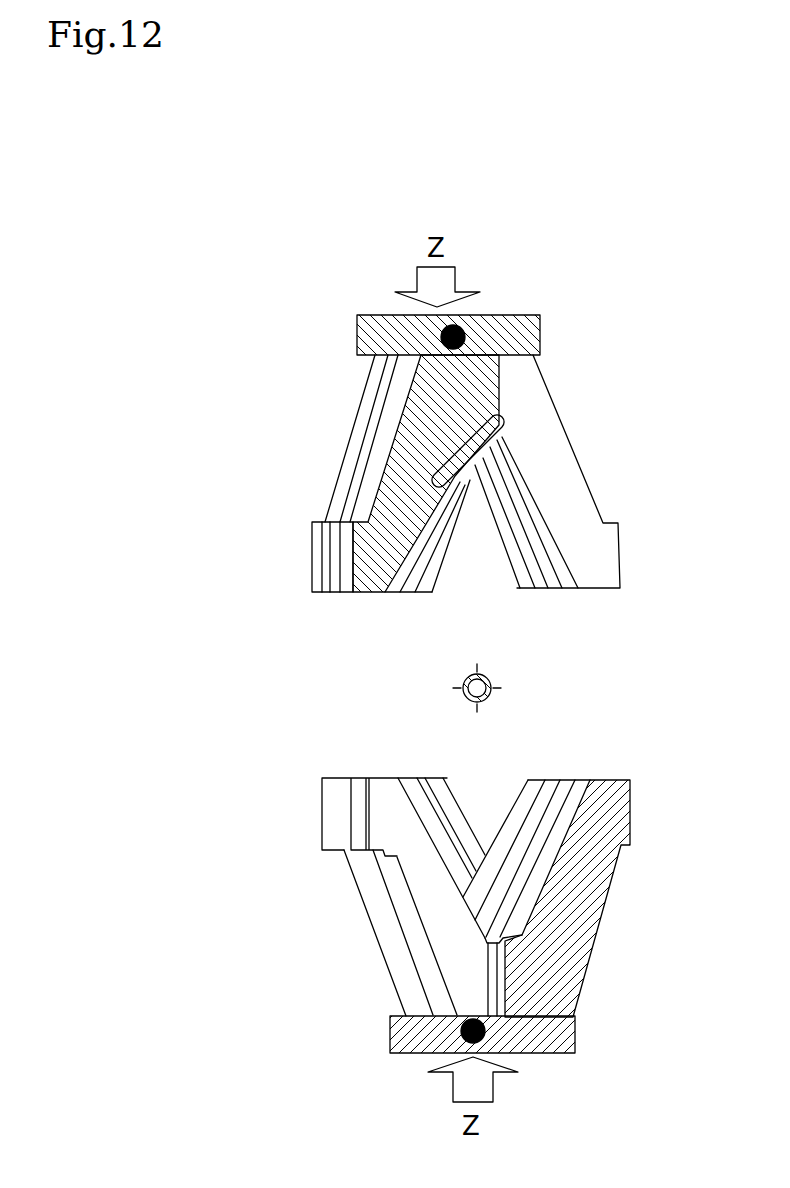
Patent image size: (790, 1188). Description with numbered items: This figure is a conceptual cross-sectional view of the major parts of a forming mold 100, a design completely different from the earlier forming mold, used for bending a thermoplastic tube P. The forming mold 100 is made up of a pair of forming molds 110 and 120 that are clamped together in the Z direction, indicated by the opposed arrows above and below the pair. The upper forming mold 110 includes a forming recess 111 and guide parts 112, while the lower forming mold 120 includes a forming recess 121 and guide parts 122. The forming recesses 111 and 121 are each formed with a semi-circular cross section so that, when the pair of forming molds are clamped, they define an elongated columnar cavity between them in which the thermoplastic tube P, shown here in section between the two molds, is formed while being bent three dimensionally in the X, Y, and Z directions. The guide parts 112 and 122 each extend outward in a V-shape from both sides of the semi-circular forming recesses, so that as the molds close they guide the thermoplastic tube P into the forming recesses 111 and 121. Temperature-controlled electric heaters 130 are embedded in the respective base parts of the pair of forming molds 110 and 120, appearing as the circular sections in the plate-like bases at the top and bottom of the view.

The forming mold 100 is at (340, 650).
The forming mold 110 is at (428, 414).
The forming recess 111 is at (478, 445).
The guide part 112 is at (397, 507).
The forming mold 120 is at (467, 928).
The forming recess 121 is at (505, 938).
The guide part 122 is at (432, 930).
The electric heater 130 is at (446, 330).
The thermoplastic tube P is at (492, 683).